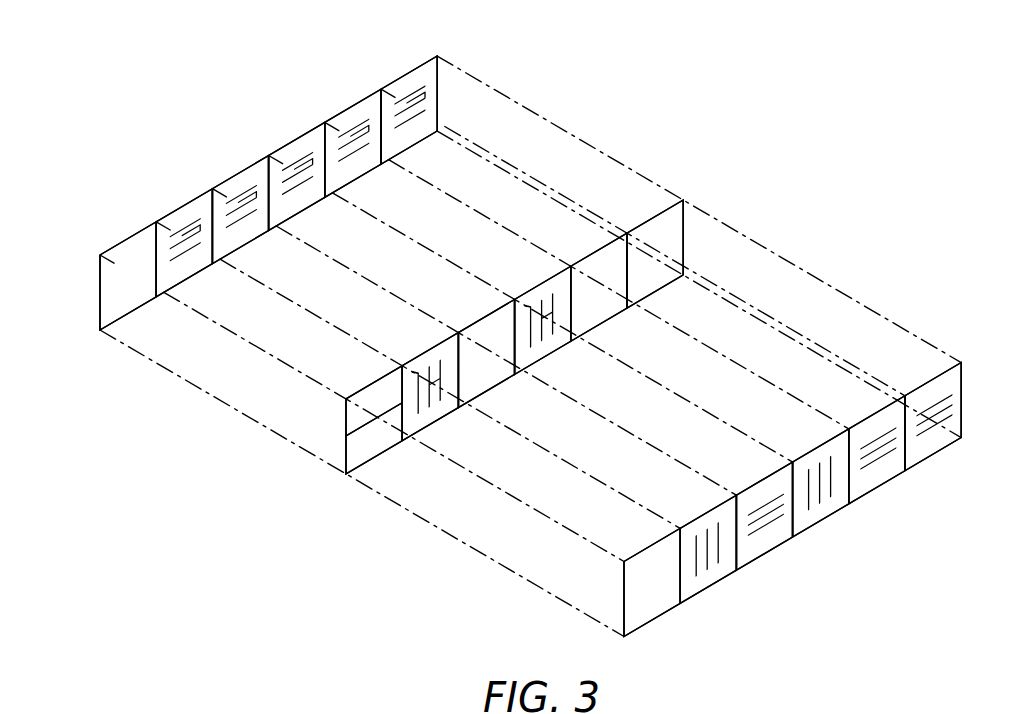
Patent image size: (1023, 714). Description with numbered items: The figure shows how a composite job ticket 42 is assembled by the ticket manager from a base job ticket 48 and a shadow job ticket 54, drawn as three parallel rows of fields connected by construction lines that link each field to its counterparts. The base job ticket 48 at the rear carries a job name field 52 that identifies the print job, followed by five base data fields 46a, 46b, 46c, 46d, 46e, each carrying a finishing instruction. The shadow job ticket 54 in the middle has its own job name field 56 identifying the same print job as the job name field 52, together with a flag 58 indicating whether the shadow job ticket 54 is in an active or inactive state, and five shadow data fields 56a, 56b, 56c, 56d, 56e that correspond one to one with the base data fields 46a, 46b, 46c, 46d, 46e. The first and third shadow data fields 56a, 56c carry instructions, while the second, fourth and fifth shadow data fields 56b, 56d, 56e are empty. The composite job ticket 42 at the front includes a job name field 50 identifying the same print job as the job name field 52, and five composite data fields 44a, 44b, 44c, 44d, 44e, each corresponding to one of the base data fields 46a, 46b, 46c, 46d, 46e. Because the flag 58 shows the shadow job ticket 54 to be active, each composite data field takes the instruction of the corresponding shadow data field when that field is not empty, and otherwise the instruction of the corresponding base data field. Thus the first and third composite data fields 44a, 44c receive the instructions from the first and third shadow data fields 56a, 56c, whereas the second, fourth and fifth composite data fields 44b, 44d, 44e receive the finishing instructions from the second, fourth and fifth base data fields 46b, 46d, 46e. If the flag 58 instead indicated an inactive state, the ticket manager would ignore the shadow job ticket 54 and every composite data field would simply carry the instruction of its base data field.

The composite job ticket 42 is at (570, 623).
The first composite data field 44a is at (712, 580).
The second composite data field 44b is at (767, 548).
The third composite data field 44c is at (823, 515).
The fourth composite data field 44d is at (880, 483).
The fifth composite data field 44e is at (935, 448).
The first base data field 46a is at (190, 201).
The second base data field 46b is at (247, 167).
The third base data field 46c is at (303, 134).
The fourth base data field 46d is at (362, 99).
The fifth base data field 46e is at (412, 70).
The base job ticket 48 is at (86, 300).
The job name field 50 is at (650, 613).
The job name field 52 is at (147, 226).
The shadow job ticket 54 is at (293, 463).
The job name field 56 is at (367, 452).
The first shadow data field 56a is at (443, 343).
The second shadow data field 56b is at (498, 314).
The third shadow data field 56c is at (553, 280).
The fourth shadow data field 56d is at (605, 250).
The fifth shadow data field 56e is at (665, 215).
The flag 58 is at (380, 383).